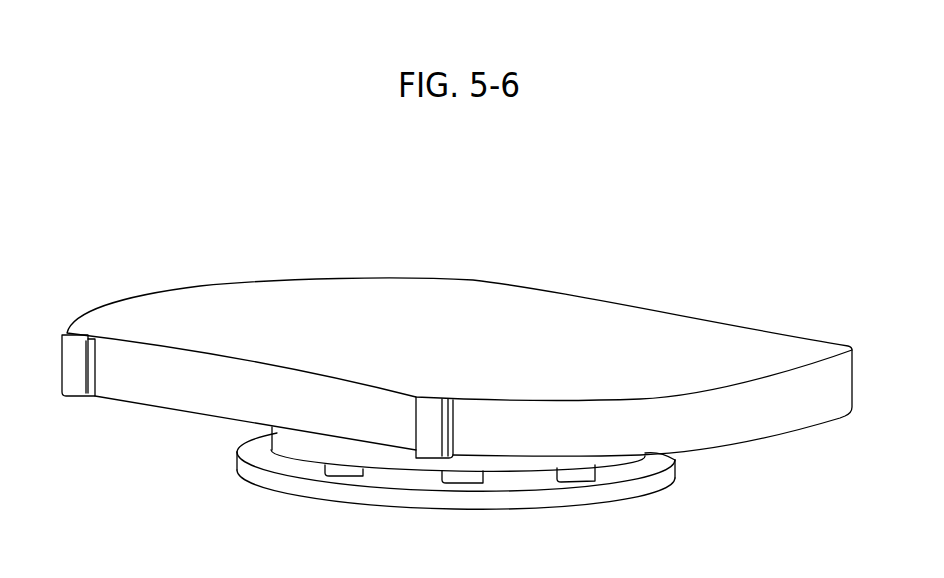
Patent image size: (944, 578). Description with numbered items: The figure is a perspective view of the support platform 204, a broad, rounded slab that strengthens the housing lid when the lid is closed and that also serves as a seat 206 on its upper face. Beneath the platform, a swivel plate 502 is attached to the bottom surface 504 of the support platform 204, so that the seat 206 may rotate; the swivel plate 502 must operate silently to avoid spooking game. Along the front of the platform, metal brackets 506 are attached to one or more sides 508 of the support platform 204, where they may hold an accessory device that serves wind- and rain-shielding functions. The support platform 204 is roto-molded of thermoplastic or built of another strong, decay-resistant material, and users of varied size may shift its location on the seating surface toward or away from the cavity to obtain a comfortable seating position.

The support platform 204 is at (459, 316).
The seat 206 is at (418, 344).
The swivel plate 502 is at (675, 477).
The bottom surface 504 is at (788, 437).
The metal brackets 506 is at (78, 373).
The sides 508 is at (203, 403).